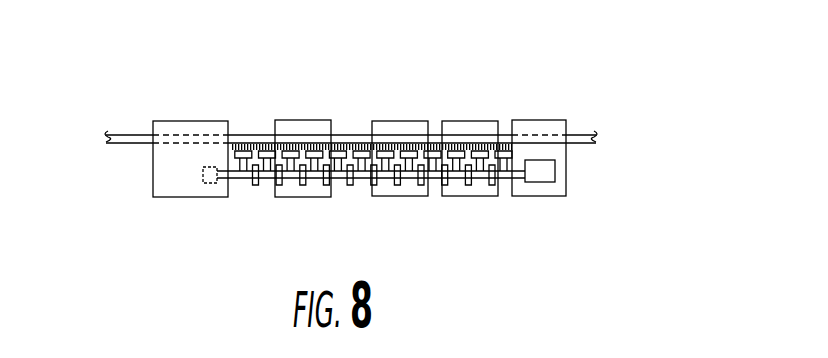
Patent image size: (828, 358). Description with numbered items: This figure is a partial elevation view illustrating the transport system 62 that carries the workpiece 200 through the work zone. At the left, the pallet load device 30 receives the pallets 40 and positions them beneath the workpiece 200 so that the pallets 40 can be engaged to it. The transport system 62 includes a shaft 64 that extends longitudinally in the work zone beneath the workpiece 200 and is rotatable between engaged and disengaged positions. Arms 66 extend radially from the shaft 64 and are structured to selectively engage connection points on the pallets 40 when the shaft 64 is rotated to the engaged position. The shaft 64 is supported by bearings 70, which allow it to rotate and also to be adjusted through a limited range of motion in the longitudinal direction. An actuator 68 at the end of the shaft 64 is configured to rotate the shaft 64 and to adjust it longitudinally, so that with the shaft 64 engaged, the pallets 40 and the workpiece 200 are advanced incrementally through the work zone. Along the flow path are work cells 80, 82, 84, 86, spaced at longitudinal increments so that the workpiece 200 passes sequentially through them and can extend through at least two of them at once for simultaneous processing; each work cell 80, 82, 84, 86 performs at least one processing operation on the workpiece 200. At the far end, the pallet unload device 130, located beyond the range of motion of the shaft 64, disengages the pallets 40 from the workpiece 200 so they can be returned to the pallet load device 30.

The workpiece 200 is at (123, 136).
The pallet load device 30 is at (193, 121).
The pallets 40 is at (347, 143).
The transport system 62 is at (401, 162).
The shaft 64 is at (268, 186).
The arms 66 is at (247, 151).
The actuator 68 is at (555, 178).
The bearings 70 is at (349, 186).
The work cell 80 is at (303, 120).
The work cell 82 is at (398, 121).
The work cell 84 is at (467, 121).
The work cell 86 is at (545, 120).
The pallet unload device 130 is at (581, 110).